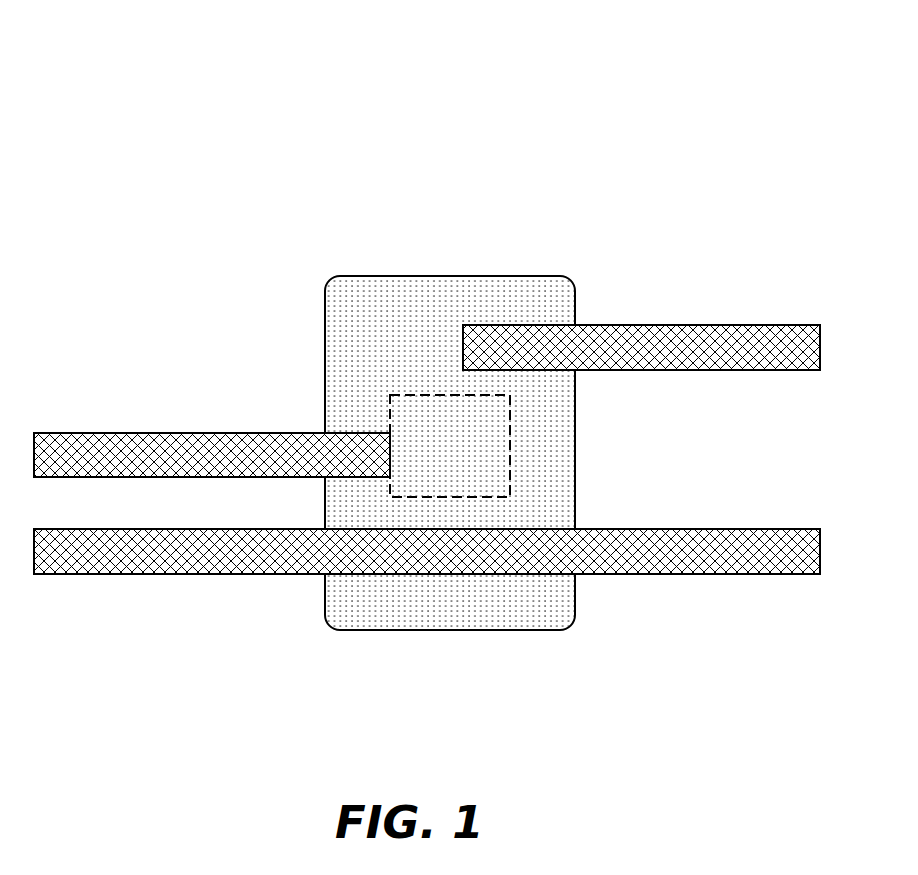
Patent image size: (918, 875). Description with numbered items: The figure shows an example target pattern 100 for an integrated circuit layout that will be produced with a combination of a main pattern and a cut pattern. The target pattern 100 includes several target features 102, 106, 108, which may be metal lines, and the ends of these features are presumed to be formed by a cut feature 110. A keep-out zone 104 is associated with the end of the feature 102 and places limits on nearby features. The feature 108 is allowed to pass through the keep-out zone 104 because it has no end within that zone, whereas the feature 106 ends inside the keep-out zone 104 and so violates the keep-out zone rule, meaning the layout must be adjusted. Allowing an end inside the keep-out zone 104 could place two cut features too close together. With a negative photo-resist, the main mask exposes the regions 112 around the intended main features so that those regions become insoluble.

The target pattern 100 is at (161, 117).
The target feature 102 is at (285, 432).
The keep-out zone 104 is at (377, 338).
The feature 106 is at (704, 324).
The feature 108 is at (172, 575).
The cut feature 110 is at (430, 462).
The regions 112 is at (102, 512).